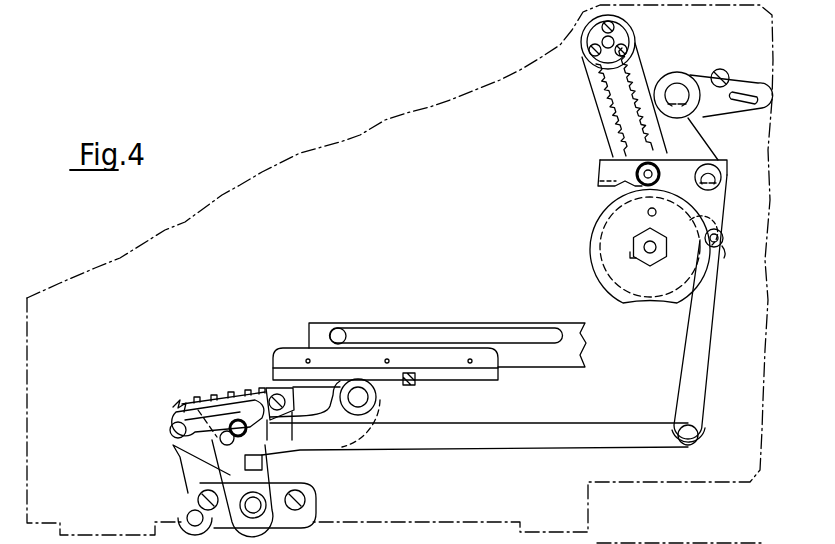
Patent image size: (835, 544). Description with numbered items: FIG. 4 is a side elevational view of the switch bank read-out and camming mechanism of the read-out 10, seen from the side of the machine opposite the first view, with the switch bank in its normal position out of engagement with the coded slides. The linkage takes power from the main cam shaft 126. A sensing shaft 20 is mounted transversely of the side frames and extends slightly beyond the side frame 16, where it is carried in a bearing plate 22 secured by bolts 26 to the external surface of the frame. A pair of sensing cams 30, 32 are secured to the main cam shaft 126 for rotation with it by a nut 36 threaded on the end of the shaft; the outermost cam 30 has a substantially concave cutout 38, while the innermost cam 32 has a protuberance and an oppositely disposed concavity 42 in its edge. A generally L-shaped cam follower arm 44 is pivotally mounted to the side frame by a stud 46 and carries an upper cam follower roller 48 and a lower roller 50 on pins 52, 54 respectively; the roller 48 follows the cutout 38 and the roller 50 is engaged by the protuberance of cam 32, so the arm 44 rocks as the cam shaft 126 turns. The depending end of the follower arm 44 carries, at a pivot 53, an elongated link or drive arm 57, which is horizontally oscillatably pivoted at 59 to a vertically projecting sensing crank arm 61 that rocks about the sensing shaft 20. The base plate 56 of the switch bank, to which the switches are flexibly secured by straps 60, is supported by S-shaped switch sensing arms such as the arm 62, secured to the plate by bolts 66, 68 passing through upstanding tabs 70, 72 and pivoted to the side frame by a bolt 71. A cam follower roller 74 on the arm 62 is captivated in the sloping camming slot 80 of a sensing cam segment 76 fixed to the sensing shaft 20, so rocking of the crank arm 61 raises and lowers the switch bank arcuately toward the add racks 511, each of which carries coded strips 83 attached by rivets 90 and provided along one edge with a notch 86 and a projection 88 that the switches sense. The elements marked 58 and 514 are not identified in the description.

The read-out 10 is at (592, 250).
The side frame 16 is at (96, 437).
The sensing shaft 20 is at (253, 513).
The bearing plate 22 is at (300, 520).
The bolts 26 is at (197, 500).
The sensing cam 30 is at (600, 283).
The sensing cam 32 is at (610, 213).
The nut 36 is at (650, 267).
The cutout 38 is at (650, 305).
The concavity 42 is at (716, 216).
The cam follower arm 44 is at (708, 333).
The stud 46 is at (718, 175).
The upper cam follower roller 48 is at (662, 173).
The lower roller 50 is at (736, 257).
The pin 52 is at (647, 166).
The pivot 53 is at (688, 445).
The pin 54 is at (722, 236).
The base plate 56 is at (180, 407).
The elongated link or drive arm 57 is at (556, 423).
The lever 58 is at (172, 445).
The pivot 59 is at (172, 441).
The straps 60 is at (180, 472).
The sensing crank arm 61 is at (252, 489).
The switch sensing arm 62 is at (376, 413).
The bolt 66 is at (212, 395).
The bolt 68 is at (288, 410).
The upstanding tabs 70 is at (196, 400).
The bolt 71 is at (370, 397).
The upstanding tabs 72 is at (263, 392).
The cam follower roller 74 is at (270, 438).
The sensing cam segment 76 is at (264, 466).
The camming slot 80 is at (172, 430).
The coded strip 83 is at (465, 378).
The notch 86 is at (413, 385).
The projection 88 is at (325, 380).
The rivets 90 is at (305, 357).
The main cam shaft 126 is at (628, 247).
The add rack 511 is at (309, 328).
The slot 514 is at (346, 333).